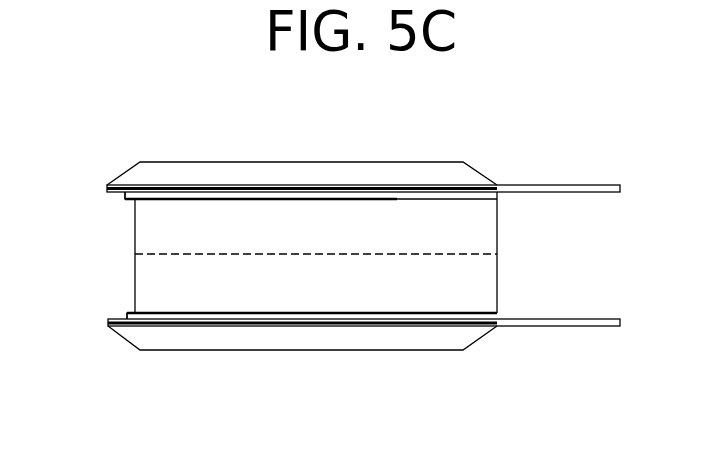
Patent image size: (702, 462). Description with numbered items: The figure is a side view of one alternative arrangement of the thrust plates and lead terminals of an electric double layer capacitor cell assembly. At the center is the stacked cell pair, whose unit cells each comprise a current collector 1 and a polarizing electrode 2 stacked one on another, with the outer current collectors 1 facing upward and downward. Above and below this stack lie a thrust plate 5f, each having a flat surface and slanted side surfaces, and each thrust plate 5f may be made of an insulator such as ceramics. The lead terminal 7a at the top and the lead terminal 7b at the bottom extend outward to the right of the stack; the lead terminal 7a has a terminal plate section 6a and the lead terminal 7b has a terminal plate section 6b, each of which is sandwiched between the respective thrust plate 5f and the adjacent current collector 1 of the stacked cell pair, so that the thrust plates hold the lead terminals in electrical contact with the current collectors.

The current collector 1 is at (127, 198).
The polarizing electrode 2 is at (483, 227).
The thrust plate 5f is at (343, 162).
The terminal plate section 6a is at (218, 199).
The terminal plate section 6b is at (216, 314).
The lead terminal 7a is at (562, 185).
The lead terminal 7b is at (552, 326).